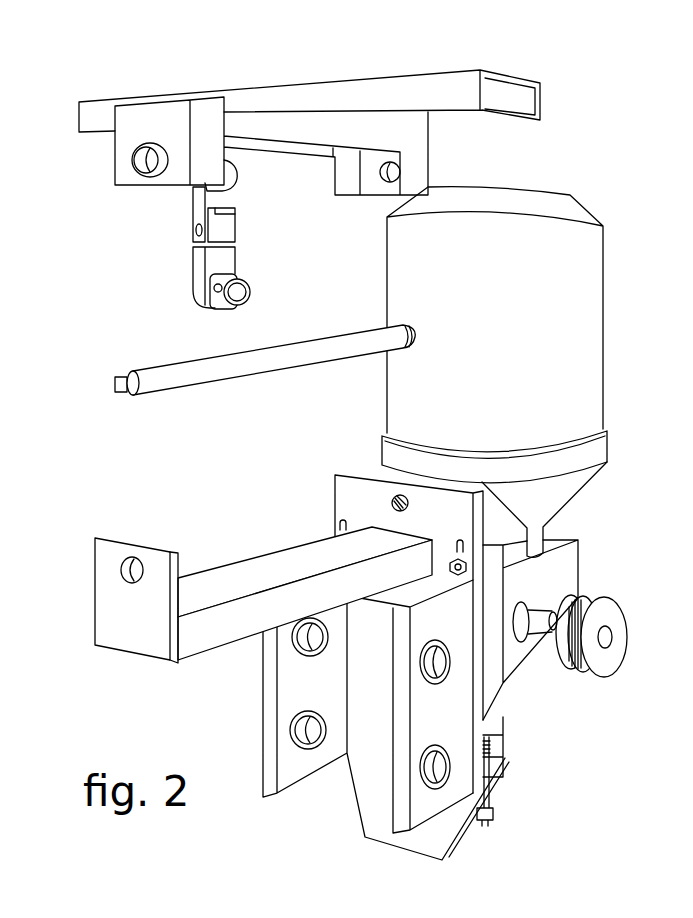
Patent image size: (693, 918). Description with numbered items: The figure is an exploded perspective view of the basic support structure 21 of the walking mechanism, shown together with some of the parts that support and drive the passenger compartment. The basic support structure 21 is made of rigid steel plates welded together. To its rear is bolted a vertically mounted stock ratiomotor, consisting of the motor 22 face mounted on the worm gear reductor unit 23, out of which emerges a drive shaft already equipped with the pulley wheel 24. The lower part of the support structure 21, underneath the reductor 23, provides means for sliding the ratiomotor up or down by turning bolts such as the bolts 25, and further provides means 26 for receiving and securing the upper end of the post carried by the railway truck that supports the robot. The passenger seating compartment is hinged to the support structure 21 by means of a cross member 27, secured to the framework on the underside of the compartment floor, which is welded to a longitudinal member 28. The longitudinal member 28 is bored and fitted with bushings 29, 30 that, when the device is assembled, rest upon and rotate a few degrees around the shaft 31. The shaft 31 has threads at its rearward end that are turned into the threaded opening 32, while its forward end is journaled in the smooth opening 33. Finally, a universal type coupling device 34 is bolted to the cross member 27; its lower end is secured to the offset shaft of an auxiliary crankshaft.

The basic support structure 21 is at (381, 692).
The motor 22 is at (503, 328).
The worm gear reductor unit 23 is at (558, 591).
The pulley wheel 24 is at (628, 620).
The bolts 25 is at (493, 797).
The means for receiving and securing the post 26 is at (466, 828).
The cross member 27 is at (401, 103).
The longitudinal member 28 is at (226, 131).
The bushing 29 is at (147, 146).
The bushing 30 is at (383, 181).
The shaft 31 is at (243, 376).
The threaded opening 32 is at (392, 505).
The smooth opening 33 is at (127, 579).
The universal type coupling device 34 is at (238, 248).